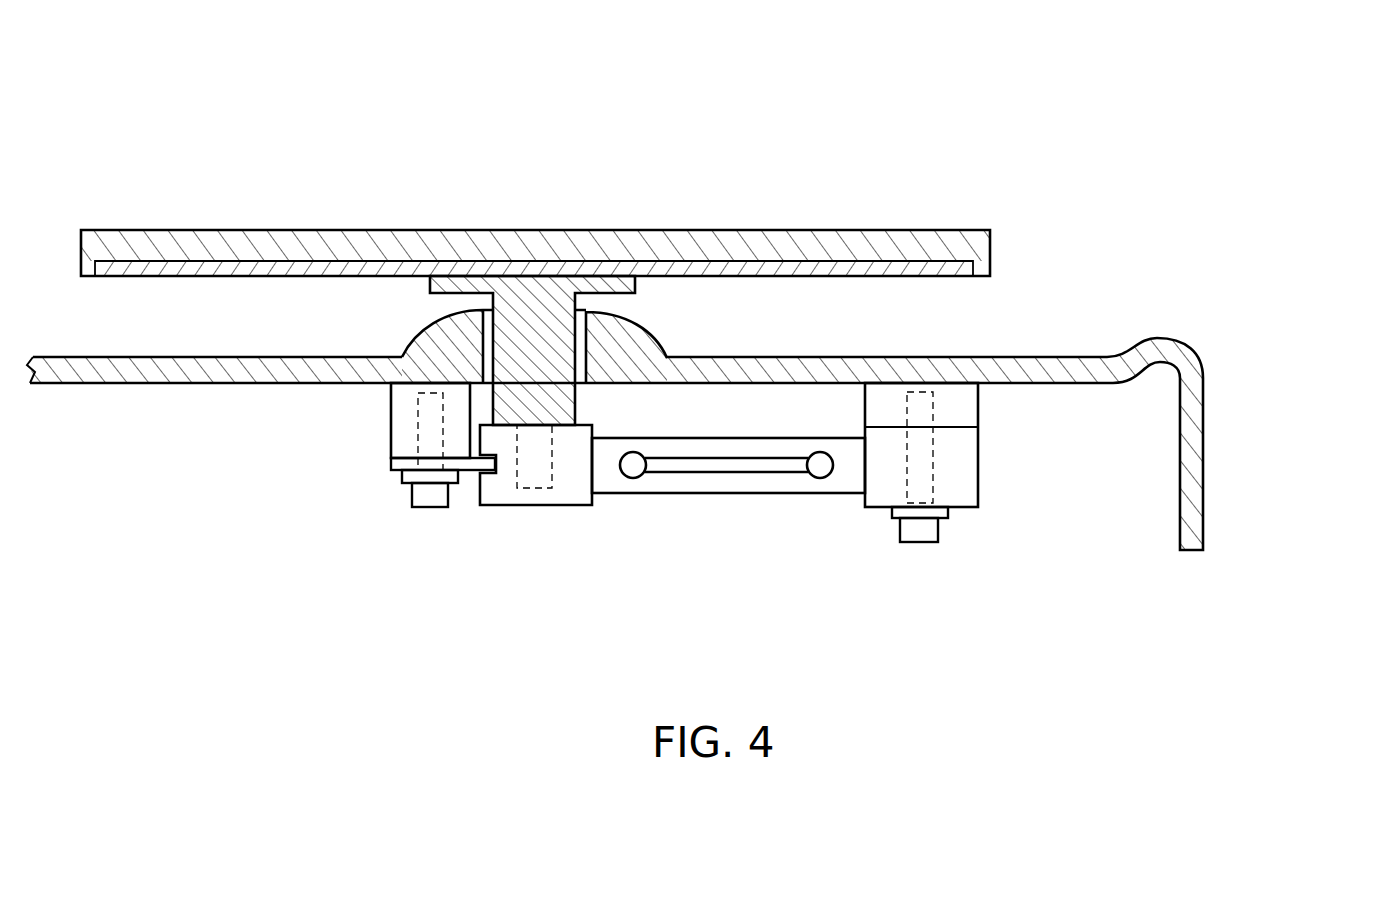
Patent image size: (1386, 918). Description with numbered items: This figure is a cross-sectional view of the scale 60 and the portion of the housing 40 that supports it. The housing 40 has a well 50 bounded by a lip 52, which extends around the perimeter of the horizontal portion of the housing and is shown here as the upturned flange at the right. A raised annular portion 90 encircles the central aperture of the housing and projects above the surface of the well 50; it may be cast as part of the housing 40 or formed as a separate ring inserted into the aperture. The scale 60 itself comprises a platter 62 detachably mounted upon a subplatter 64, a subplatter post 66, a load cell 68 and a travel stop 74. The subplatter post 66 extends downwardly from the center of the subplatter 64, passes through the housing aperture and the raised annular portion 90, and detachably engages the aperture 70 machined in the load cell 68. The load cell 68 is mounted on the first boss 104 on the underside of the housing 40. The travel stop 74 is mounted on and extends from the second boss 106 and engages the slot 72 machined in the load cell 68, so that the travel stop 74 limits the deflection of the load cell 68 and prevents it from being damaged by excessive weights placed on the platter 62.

The housing 40 is at (1245, 438).
The well 50 is at (1003, 370).
The lip 52 is at (1173, 338).
The scale 60 is at (232, 177).
The platter 62 is at (568, 240).
The subplatter 64 is at (762, 267).
The subplatter post 66 is at (527, 335).
The load cell 68 is at (845, 485).
The aperture 70 is at (548, 453).
The slot 72 is at (507, 478).
The travel stop 74 is at (390, 472).
The raised annular portion 90 is at (613, 328).
The first boss 104 is at (967, 415).
The second boss 106 is at (392, 428).